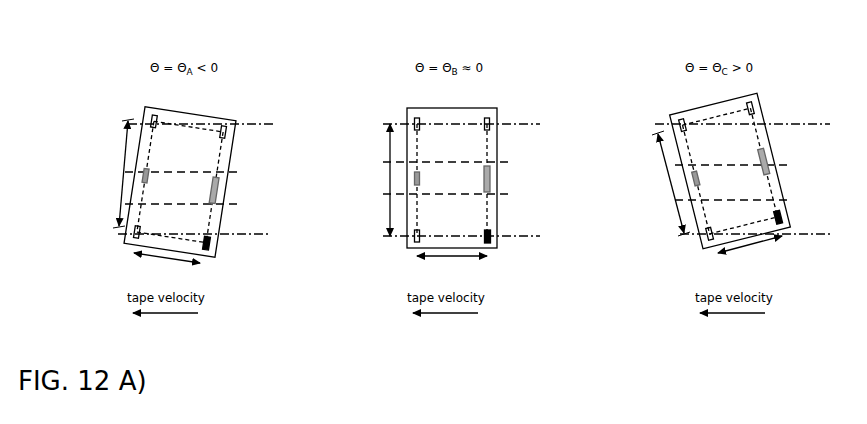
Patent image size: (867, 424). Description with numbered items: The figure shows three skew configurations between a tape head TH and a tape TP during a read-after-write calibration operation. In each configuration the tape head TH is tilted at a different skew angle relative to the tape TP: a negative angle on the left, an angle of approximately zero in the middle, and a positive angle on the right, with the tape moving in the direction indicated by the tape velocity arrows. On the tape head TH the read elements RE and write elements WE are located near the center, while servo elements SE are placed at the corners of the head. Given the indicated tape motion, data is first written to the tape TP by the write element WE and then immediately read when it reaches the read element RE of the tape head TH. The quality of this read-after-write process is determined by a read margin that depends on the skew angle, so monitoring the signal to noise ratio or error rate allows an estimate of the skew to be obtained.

The tape head TH is at (432, 113).
The tape TP is at (390, 123).
The read element RE is at (145, 177).
The write element WE is at (217, 195).
The servo element SE is at (417, 237).